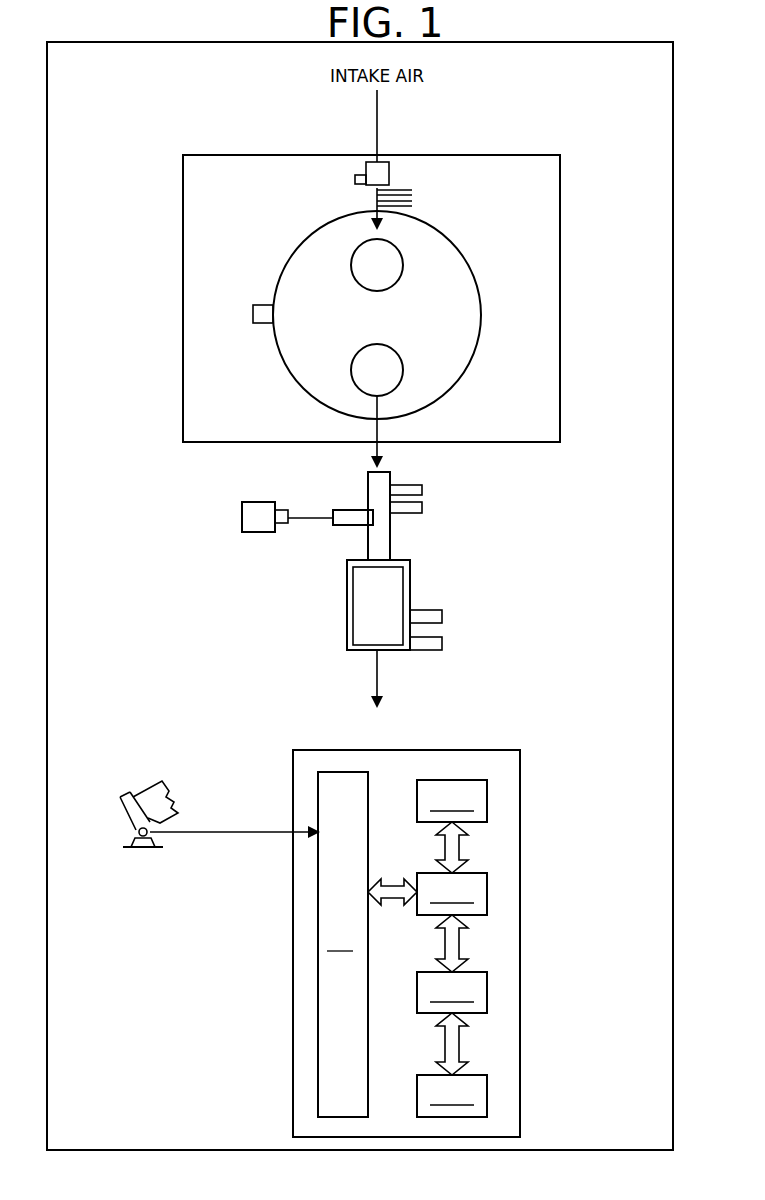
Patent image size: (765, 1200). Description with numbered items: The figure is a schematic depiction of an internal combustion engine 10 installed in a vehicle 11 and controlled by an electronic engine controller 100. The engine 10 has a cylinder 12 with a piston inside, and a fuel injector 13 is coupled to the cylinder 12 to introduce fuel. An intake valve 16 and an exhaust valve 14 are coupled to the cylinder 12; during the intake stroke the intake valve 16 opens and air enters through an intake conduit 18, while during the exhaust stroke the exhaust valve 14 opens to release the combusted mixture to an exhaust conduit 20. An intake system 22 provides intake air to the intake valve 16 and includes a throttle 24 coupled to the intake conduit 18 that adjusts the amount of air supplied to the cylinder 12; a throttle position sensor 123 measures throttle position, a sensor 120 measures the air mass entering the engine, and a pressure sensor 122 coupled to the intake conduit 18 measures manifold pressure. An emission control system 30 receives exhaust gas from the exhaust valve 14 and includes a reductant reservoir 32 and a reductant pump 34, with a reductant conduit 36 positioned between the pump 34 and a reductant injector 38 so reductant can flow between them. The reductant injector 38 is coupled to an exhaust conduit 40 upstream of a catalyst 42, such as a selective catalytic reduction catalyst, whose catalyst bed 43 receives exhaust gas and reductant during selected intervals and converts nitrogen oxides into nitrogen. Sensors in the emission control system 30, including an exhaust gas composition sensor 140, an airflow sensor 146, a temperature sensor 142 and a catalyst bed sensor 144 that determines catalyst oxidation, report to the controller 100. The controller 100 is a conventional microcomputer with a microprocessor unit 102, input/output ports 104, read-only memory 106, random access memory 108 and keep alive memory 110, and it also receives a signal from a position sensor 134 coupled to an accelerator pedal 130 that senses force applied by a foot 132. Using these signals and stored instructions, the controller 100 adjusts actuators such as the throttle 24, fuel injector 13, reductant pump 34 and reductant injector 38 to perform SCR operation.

The internal combustion engine 10 is at (560, 273).
The vehicle 11 is at (673, 78).
The cylinder 12 is at (389, 331).
The fuel injector 13 is at (262, 324).
The exhaust valve 14 is at (403, 375).
The intake valve 16 is at (403, 262).
The intake conduit 18 is at (376, 140).
The exhaust conduit 20 is at (378, 430).
The intake system 22 is at (268, 146).
The throttle 24 is at (366, 170).
The emission control system 30 is at (192, 508).
The reductant reservoir 32 is at (260, 502).
The reductant pump 34 is at (282, 524).
The reductant conduit 36 is at (306, 517).
The reductant injector 38 is at (352, 510).
The exhaust conduit 40 is at (390, 553).
The catalyst 42 is at (410, 592).
The catalyst bed 43 is at (350, 600).
The electronic engine controller 100 is at (512, 750).
The microprocessor unit 102 is at (487, 890).
The input/output ports 104 is at (368, 780).
The read-only memory 106 is at (487, 800).
The random access memory 108 is at (487, 990).
The keep alive memory 110 is at (487, 1094).
The air mass sensor 120 is at (408, 190).
The pressure sensor 122 is at (410, 204).
The throttle position sensor 123 is at (355, 181).
The accelerator pedal 130 is at (162, 804).
The foot 132 is at (168, 797).
The position sensor 134 is at (150, 836).
The exhaust gas composition sensor 140 is at (422, 490).
The temperature sensor 142 is at (442, 617).
The catalyst bed sensor 144 is at (442, 643).
The airflow sensor 146 is at (422, 508).